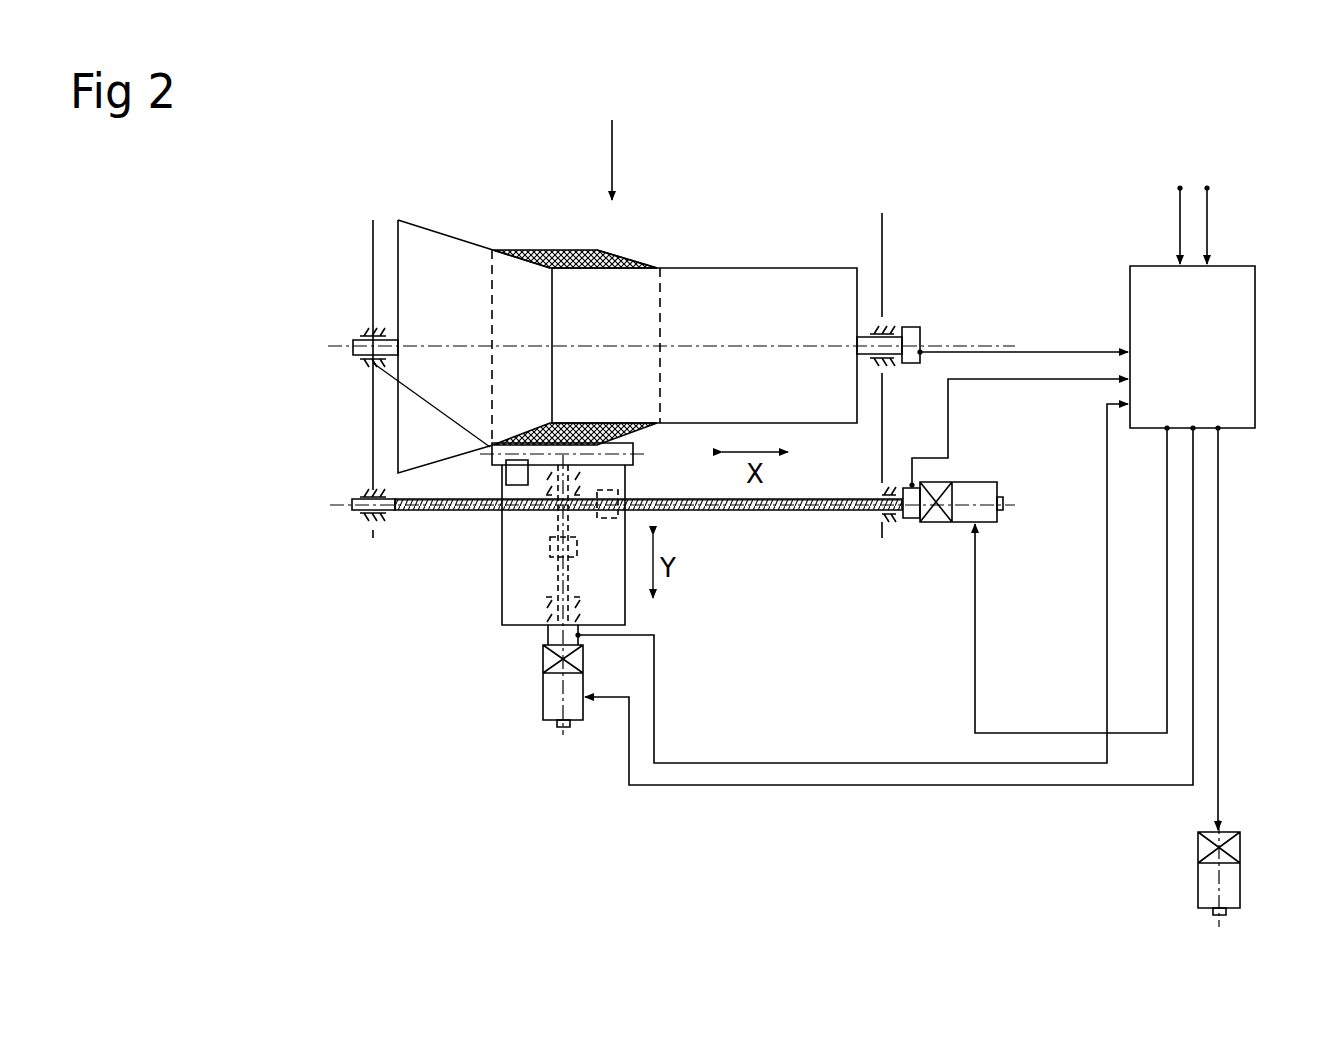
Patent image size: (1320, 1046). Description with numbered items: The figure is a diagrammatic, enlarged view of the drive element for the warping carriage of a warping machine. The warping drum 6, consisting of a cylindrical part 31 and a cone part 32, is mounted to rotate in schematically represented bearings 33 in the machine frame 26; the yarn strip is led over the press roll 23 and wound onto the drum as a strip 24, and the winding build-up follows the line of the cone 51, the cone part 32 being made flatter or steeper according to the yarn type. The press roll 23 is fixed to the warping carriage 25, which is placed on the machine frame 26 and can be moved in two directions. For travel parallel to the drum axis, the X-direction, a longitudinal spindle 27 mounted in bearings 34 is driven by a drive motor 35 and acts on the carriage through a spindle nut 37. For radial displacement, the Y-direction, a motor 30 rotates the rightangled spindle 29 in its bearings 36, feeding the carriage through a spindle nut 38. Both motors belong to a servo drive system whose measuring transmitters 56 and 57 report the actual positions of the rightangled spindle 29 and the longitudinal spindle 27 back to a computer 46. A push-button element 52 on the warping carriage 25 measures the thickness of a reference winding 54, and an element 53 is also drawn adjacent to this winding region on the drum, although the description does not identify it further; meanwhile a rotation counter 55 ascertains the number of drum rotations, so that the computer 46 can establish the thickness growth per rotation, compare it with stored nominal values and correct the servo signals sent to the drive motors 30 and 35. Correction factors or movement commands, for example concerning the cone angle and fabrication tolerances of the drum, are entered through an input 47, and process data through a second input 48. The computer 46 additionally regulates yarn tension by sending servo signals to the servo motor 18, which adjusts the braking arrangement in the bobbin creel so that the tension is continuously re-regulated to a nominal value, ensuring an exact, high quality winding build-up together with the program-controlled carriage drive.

The warping drum 6 is at (612, 120).
The servo motor 18 is at (1240, 907).
The press roll 23 is at (492, 463).
The strip 24 is at (551, 250).
The warping carriage 25 is at (502, 625).
The machine frame 26 is at (373, 220).
The longitudinal spindle 27 is at (445, 510).
The rightangled spindle 29 is at (557, 577).
The motor 30 is at (540, 722).
The cylindrical part 31 is at (703, 270).
The cone part 32 is at (445, 258).
The bearings 33 is at (360, 327).
The bearings 34 is at (352, 511).
The drive motor 35 is at (997, 482).
The bearings 36 is at (502, 492).
The spindle nut 37 is at (598, 518).
The spindle nut 38 is at (550, 556).
The computer 46 is at (1230, 266).
The input 47 is at (1180, 188).
The second input 48 is at (1207, 188).
The line of the cone 51 is at (353, 343).
The push-button element 52 is at (502, 475).
The cutting edge 53 is at (577, 268).
The reference winding 54 is at (595, 250).
The rotation counter 55 is at (919, 327).
The measuring transmitter 56 is at (900, 485).
The measuring transmitter 57 is at (548, 635).